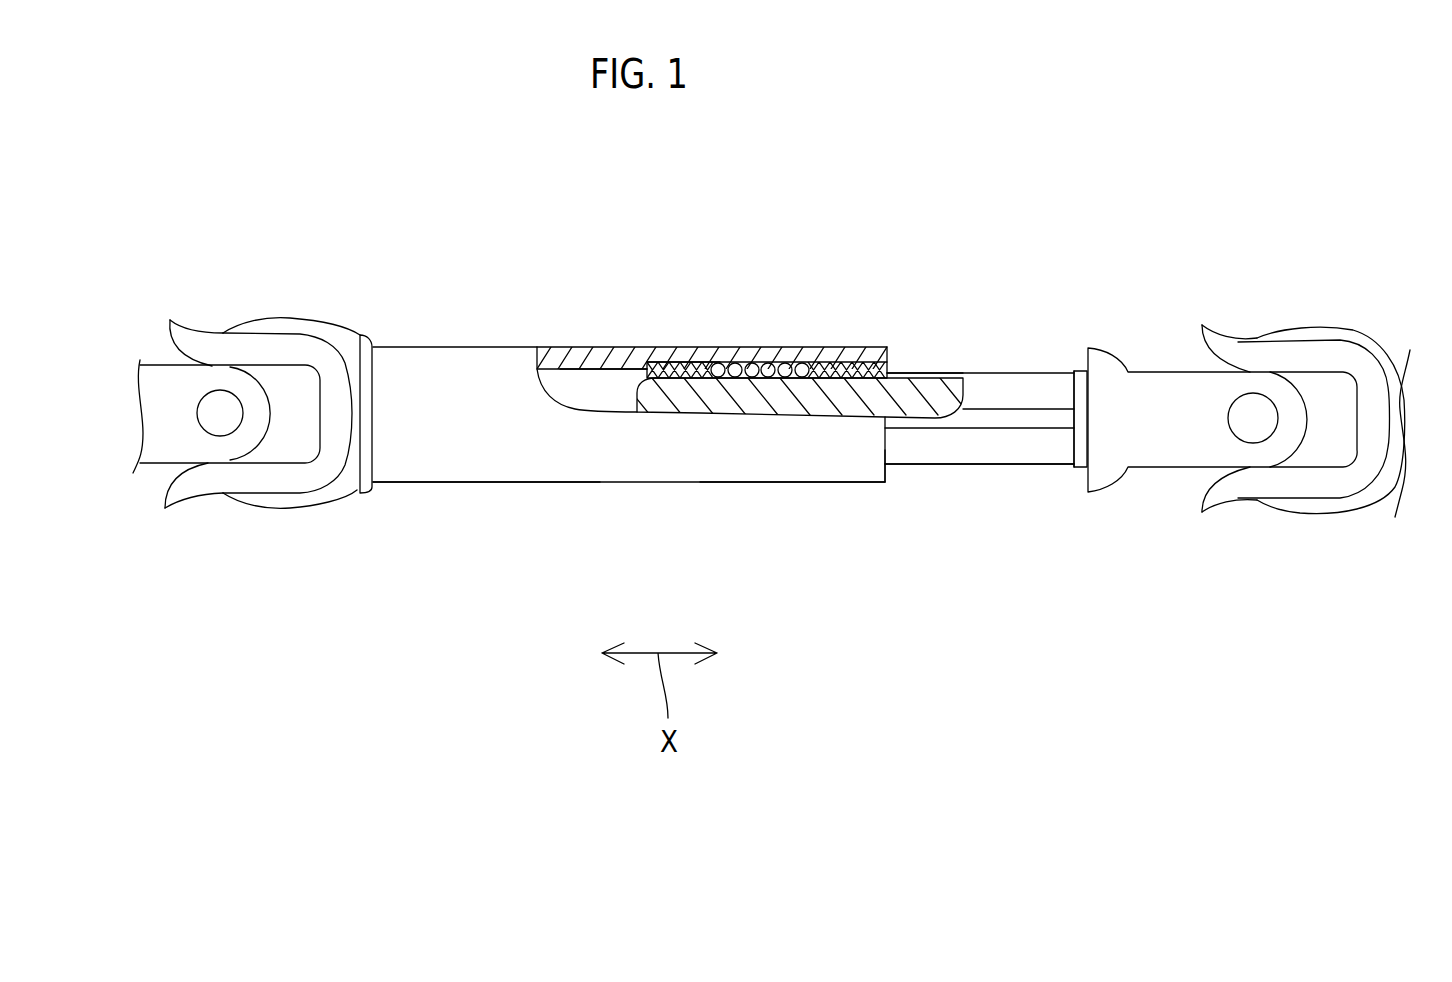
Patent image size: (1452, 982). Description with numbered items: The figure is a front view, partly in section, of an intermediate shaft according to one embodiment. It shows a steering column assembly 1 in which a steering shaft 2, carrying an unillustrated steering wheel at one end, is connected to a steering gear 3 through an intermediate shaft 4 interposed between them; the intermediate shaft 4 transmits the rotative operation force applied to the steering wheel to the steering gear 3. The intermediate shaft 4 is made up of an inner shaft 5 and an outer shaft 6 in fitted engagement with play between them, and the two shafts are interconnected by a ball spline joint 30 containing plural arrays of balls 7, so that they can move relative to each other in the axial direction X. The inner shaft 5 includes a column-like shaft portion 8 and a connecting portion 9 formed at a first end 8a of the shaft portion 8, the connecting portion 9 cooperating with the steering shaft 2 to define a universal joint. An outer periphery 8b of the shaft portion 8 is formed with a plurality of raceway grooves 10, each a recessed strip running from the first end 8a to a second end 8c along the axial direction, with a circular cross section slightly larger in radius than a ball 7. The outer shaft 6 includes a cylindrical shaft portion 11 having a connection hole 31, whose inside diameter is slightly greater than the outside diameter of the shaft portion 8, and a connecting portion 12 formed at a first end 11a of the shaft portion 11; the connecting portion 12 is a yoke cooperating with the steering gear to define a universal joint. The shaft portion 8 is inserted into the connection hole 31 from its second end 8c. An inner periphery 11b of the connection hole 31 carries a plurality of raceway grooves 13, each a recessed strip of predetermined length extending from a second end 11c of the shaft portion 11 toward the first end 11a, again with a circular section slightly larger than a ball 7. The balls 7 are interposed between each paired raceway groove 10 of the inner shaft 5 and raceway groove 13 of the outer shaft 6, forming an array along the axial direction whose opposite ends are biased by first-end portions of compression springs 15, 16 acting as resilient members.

The steering column assembly 1 is at (847, 221).
The steering shaft 2 is at (1360, 548).
The steering gear 3 is at (160, 494).
The intermediate shaft 4 is at (764, 510).
The inner shaft 5 is at (1038, 480).
The outer shaft 6 is at (474, 500).
The balls 7 is at (802, 363).
The shaft portion 8 is at (970, 464).
The first end 8a is at (1077, 388).
The outer periphery 8b is at (1048, 373).
The second end 8c is at (617, 410).
The connecting portion 9 is at (1160, 467).
The raceway grooves 10 is at (990, 420).
The cylindrical shaft portion 11 is at (522, 483).
The first end 11a is at (359, 361).
The inner periphery 11b is at (577, 378).
The second end 11c is at (885, 470).
The connecting portion 12 is at (325, 510).
The raceway grooves 13 is at (698, 362).
The compression spring 15 is at (853, 347).
The compression spring 16 is at (678, 362).
The ball spline joint 30 is at (836, 304).
The connection hole 31 is at (608, 382).